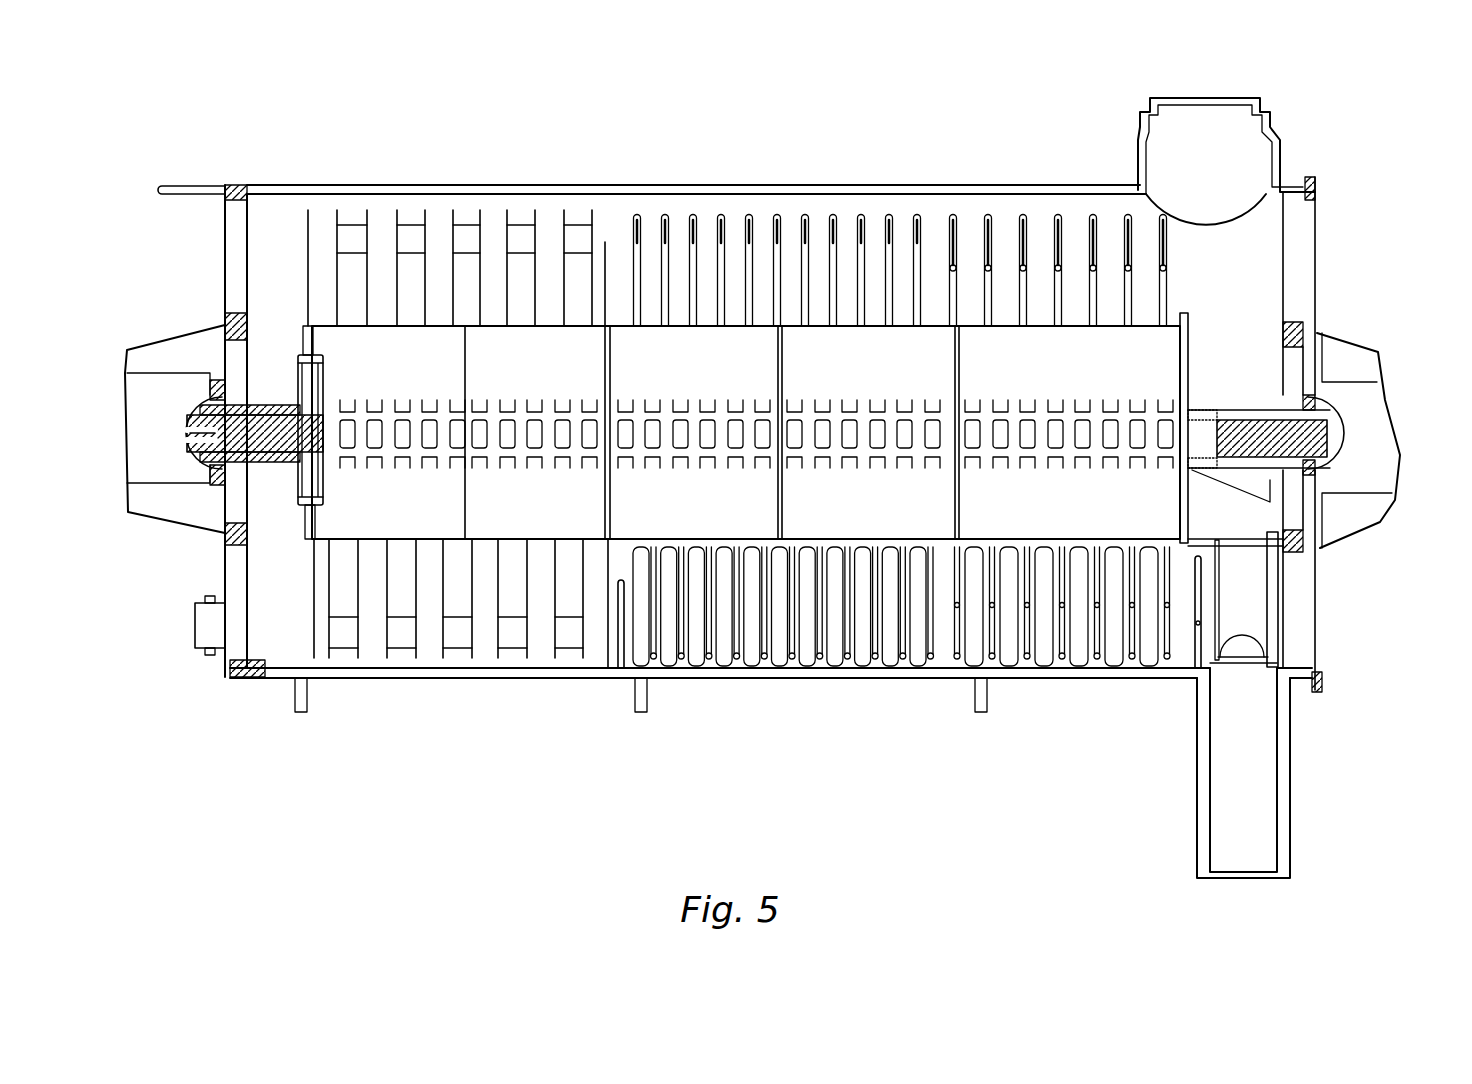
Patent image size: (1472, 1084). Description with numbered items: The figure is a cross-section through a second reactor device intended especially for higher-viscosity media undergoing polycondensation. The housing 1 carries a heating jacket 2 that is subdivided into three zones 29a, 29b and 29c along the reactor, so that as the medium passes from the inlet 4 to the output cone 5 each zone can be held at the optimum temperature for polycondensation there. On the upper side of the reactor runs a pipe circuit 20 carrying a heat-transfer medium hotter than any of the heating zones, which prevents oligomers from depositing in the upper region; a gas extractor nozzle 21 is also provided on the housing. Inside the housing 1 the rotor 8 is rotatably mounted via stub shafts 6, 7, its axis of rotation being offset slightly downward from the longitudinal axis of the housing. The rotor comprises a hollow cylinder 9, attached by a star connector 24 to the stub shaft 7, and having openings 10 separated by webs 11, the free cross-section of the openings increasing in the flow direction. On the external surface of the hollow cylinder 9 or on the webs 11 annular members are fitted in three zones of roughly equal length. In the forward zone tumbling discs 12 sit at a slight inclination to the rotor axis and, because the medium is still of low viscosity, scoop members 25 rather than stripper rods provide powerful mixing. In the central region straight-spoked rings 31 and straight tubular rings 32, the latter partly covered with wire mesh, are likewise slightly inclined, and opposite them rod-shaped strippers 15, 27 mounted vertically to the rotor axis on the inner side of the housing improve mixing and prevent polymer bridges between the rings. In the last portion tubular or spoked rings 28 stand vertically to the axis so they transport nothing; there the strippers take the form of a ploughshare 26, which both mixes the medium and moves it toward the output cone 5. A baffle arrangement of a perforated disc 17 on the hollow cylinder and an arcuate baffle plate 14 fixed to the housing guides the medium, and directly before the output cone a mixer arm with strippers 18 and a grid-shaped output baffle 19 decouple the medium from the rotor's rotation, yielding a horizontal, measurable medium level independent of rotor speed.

The housing 1 is at (390, 195).
The heating jacket 2 is at (335, 185).
The inlet 4 is at (217, 627).
The output cone 5 is at (1253, 740).
The stub shaft 6 is at (210, 473).
The stub shaft 7 is at (1250, 430).
The rotor 8 is at (303, 350).
The hollow cylinder 9 is at (622, 323).
The openings 10 is at (452, 433).
The webs 11 is at (378, 435).
The tumbling discs 12 is at (425, 220).
The baffle plate 14 is at (622, 622).
The rod-shaped stripper 15 is at (680, 655).
The disc 17 is at (605, 242).
The mixer arm with strippers 18 is at (1272, 610).
The grid-shaped output baffle 19 is at (1197, 625).
The pipe circuit 20 is at (186, 187).
The gas extractor nozzle 21 is at (1253, 160).
The star connector 24 is at (1190, 390).
The scoop members 25 is at (468, 240).
The ploughshare-shaped strippers 26 is at (905, 652).
The rod-shaped stripper 27 is at (815, 655).
The tubular and/or spoked rings 28 is at (918, 242).
The zone 29a is at (473, 673).
The zone 29b is at (752, 672).
The zone 29c is at (1062, 672).
The straight-spoked rings 31 is at (637, 242).
The straight tubular rings 32 is at (805, 238).